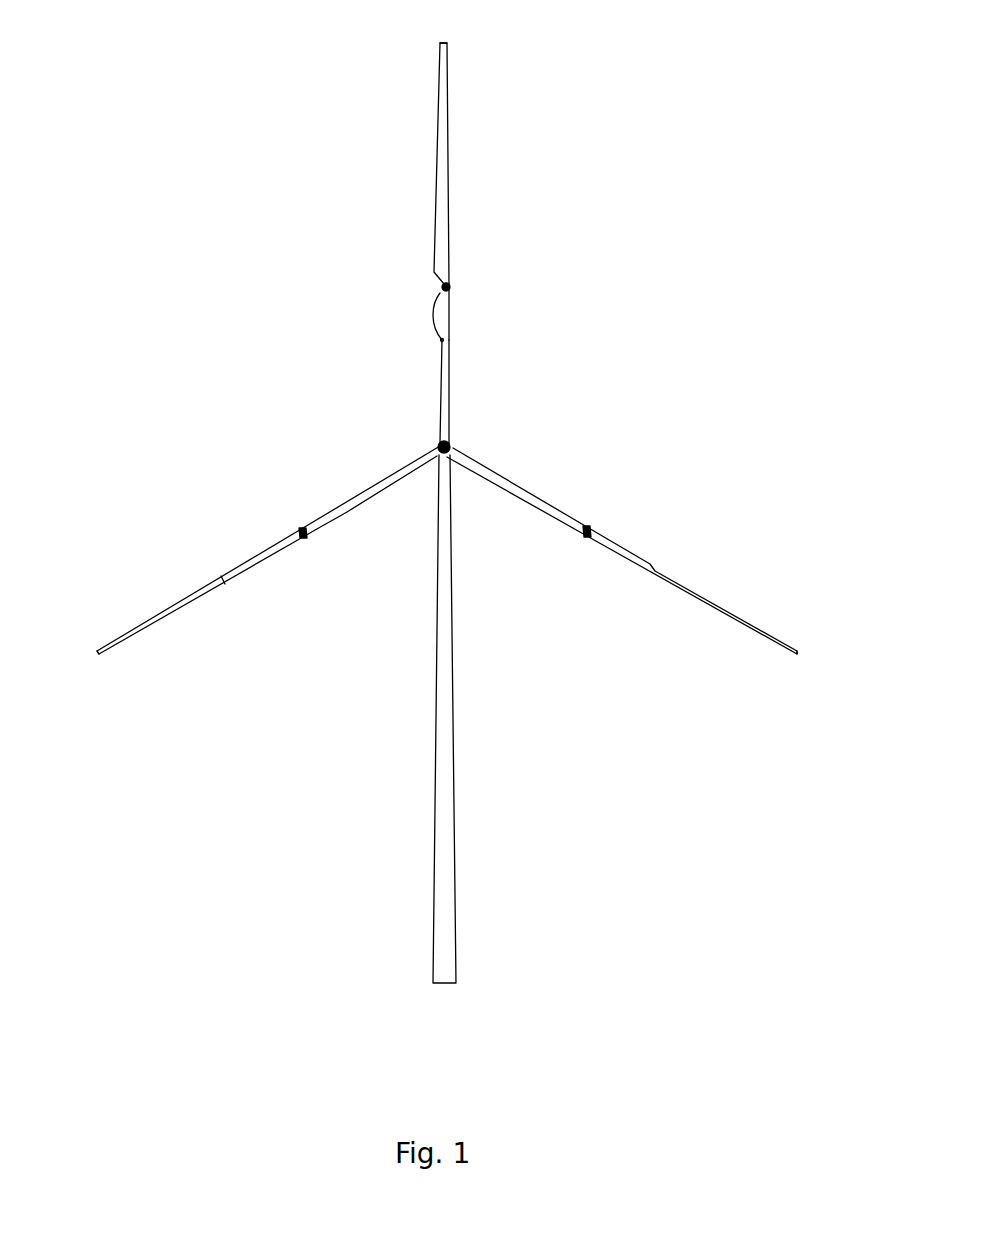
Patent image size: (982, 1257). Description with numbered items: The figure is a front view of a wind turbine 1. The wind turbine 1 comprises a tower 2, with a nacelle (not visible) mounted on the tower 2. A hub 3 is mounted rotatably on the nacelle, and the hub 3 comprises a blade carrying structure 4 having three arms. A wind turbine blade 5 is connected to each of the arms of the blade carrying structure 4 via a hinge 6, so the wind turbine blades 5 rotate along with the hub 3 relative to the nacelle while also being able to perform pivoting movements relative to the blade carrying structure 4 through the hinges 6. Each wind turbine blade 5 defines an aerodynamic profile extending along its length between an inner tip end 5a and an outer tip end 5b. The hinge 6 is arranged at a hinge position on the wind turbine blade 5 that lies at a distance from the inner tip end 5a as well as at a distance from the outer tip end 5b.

The wind turbine 1 is at (711, 191).
The tower 2 is at (443, 811).
The hub 3 is at (447, 457).
The blade carrying structure 4 is at (446, 402).
The wind turbine blade 5 is at (445, 163).
The inner tip end 5a is at (440, 341).
The outer tip end 5b is at (443, 43).
The hinge 6 is at (449, 287).